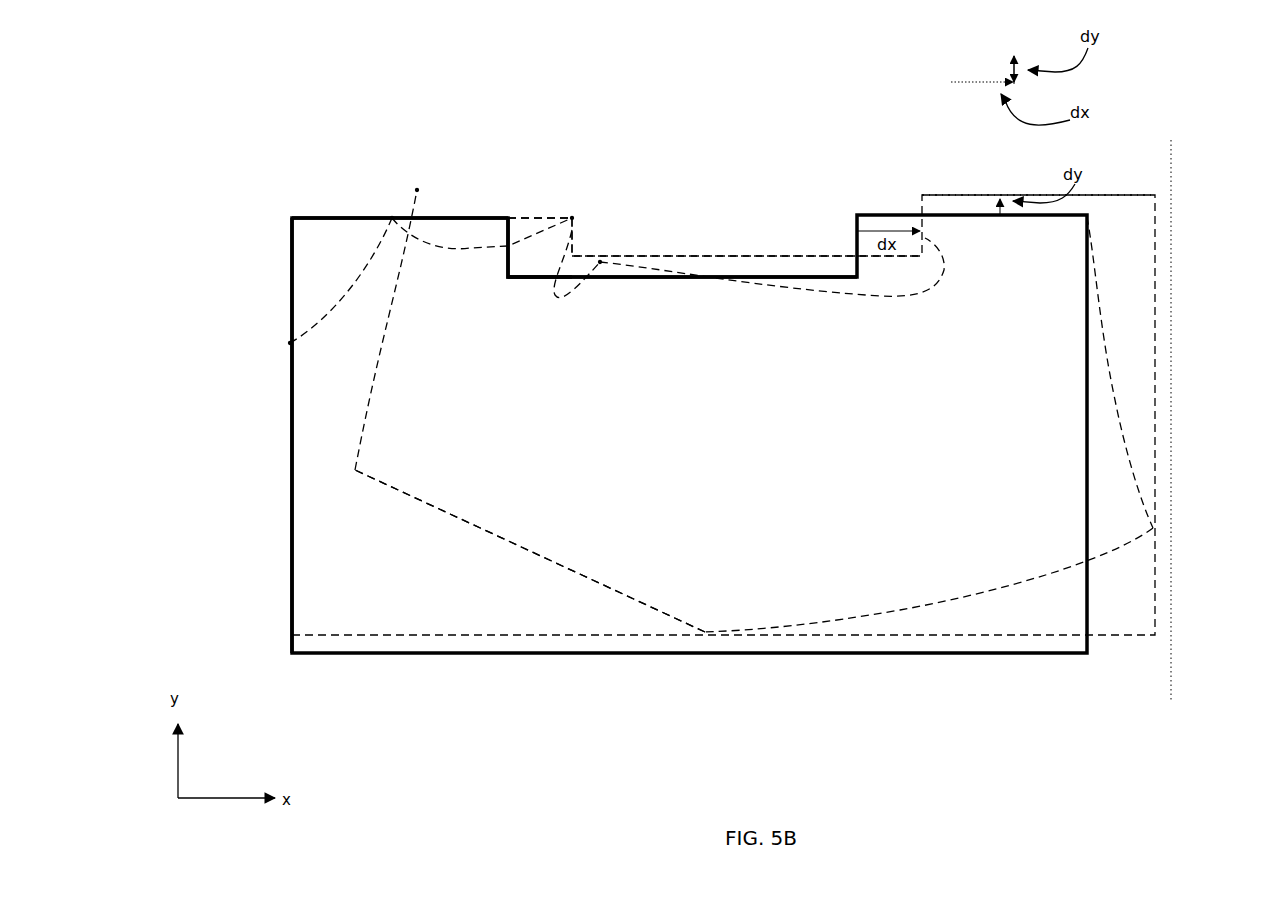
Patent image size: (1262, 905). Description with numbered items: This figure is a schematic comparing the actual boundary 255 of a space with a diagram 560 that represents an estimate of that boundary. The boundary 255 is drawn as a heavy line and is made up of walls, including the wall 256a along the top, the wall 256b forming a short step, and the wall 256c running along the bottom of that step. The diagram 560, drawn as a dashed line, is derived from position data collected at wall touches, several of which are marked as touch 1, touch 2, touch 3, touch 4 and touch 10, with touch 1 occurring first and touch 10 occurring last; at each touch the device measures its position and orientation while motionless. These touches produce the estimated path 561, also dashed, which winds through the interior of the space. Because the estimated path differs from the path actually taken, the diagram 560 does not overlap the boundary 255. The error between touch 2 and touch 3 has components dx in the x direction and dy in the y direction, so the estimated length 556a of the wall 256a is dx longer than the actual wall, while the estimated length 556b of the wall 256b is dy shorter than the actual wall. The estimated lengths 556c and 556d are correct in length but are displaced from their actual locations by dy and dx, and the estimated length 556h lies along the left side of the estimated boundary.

The boundary 255 is at (1195, 729).
The diagram 560 is at (1157, 287).
The wall 256a is at (400, 204).
The wall 256b is at (540, 247).
The wall 256c is at (682, 293).
The estimated length of wall 256a 556a is at (540, 213).
The estimated length of wall 256b 556b is at (573, 247).
The estimated length of wall 256c 556c is at (712, 256).
The estimated length of wall 256d 556d is at (922, 215).
The estimated length of wall 256h 556h is at (289, 422).
The estimated path 561 is at (493, 518).
The wall touch 1 is at (281, 345).
The wall touch 2 is at (391, 209).
The wall touch 3 is at (578, 221).
The wall touch 4 is at (604, 251).
The wall touch 10 is at (405, 189).